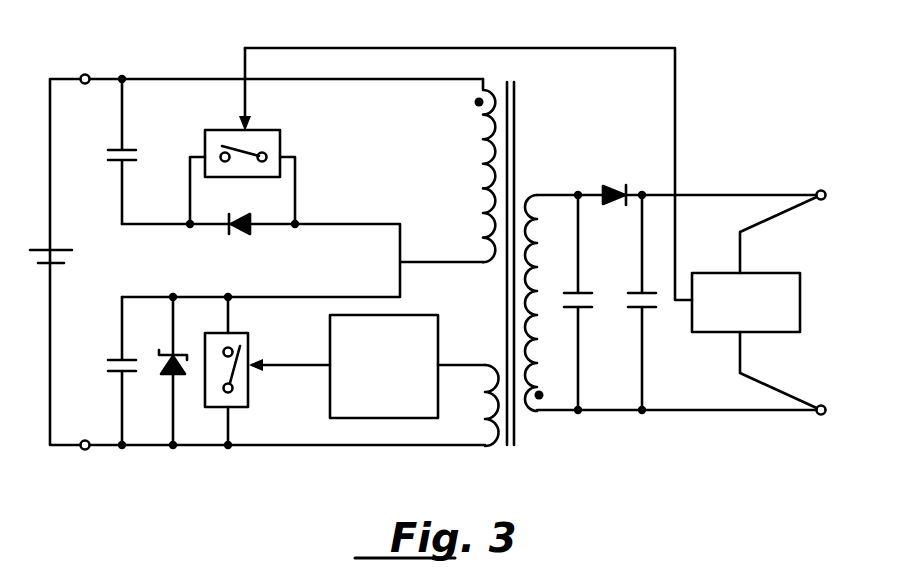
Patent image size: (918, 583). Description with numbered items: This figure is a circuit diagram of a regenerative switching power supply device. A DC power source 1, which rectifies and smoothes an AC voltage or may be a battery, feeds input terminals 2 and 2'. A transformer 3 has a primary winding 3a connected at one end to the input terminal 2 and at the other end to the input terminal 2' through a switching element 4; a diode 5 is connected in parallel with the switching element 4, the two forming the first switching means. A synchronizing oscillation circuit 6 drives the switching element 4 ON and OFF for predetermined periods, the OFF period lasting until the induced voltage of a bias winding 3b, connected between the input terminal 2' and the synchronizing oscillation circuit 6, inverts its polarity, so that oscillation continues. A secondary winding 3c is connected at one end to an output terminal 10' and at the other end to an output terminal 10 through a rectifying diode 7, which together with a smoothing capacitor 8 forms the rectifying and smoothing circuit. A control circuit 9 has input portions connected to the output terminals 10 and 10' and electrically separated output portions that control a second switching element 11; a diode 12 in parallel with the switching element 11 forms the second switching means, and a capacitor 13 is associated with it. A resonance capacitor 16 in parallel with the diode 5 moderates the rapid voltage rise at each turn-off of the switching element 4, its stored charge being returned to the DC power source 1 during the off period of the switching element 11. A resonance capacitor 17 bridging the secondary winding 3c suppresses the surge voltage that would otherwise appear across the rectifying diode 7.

The DC power source 1 is at (60, 250).
The input terminal 2 is at (100, 50).
The input terminal 2' is at (99, 471).
The transformer 3 is at (518, 92).
The primary winding 3a is at (492, 158).
The bias winding 3b is at (489, 401).
The secondary winding 3c is at (530, 353).
The switching element 4 is at (246, 388).
The diode 5 is at (169, 350).
The synchronizing oscillation circuit 6 is at (331, 404).
The rectifying diode 7 is at (618, 185).
The smoothing capacitor 8 is at (638, 310).
The control circuit 9 is at (708, 334).
The output terminal 10 is at (816, 164).
The output terminal 10' is at (812, 442).
The switching element 11 is at (284, 141).
The diode 12 is at (240, 236).
The capacitor 13 is at (132, 148).
The resonance capacitor 16 is at (118, 358).
The resonance capacitor 17 is at (585, 292).